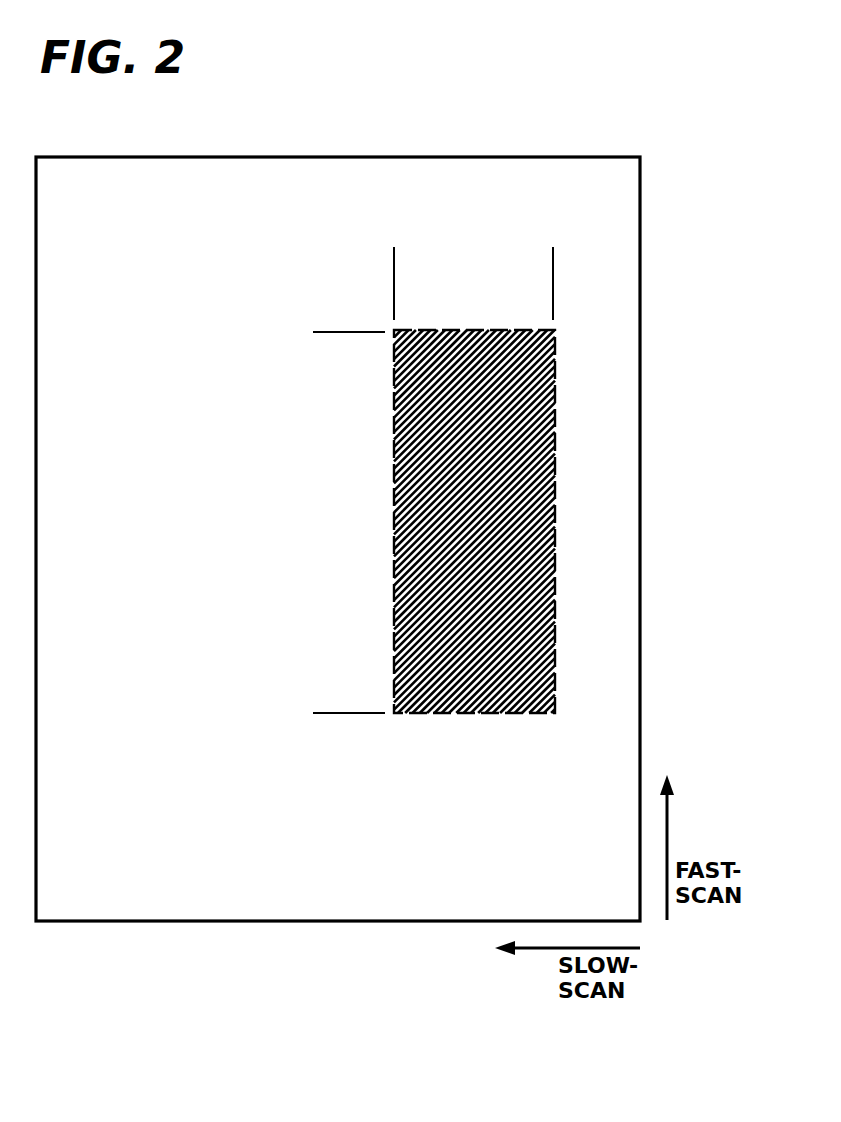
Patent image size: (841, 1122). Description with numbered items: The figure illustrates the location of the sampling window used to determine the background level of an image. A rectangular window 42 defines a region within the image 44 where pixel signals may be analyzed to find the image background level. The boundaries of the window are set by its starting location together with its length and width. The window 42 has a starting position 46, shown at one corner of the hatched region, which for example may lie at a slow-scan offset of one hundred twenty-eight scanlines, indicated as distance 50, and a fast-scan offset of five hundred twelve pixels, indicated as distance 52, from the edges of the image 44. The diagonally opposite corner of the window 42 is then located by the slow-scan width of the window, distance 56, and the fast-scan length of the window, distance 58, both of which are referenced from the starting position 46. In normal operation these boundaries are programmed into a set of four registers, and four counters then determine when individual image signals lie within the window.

The rectangular window 42 is at (557, 420).
The image 44 is at (487, 157).
The starting position 46 is at (553, 730).
The slow-scan offset distance 50 is at (639, 520).
The fast-scan offset distance 52 is at (476, 714).
The slow-scan width 56 is at (552, 265).
The fast-scan length 58 is at (332, 333).